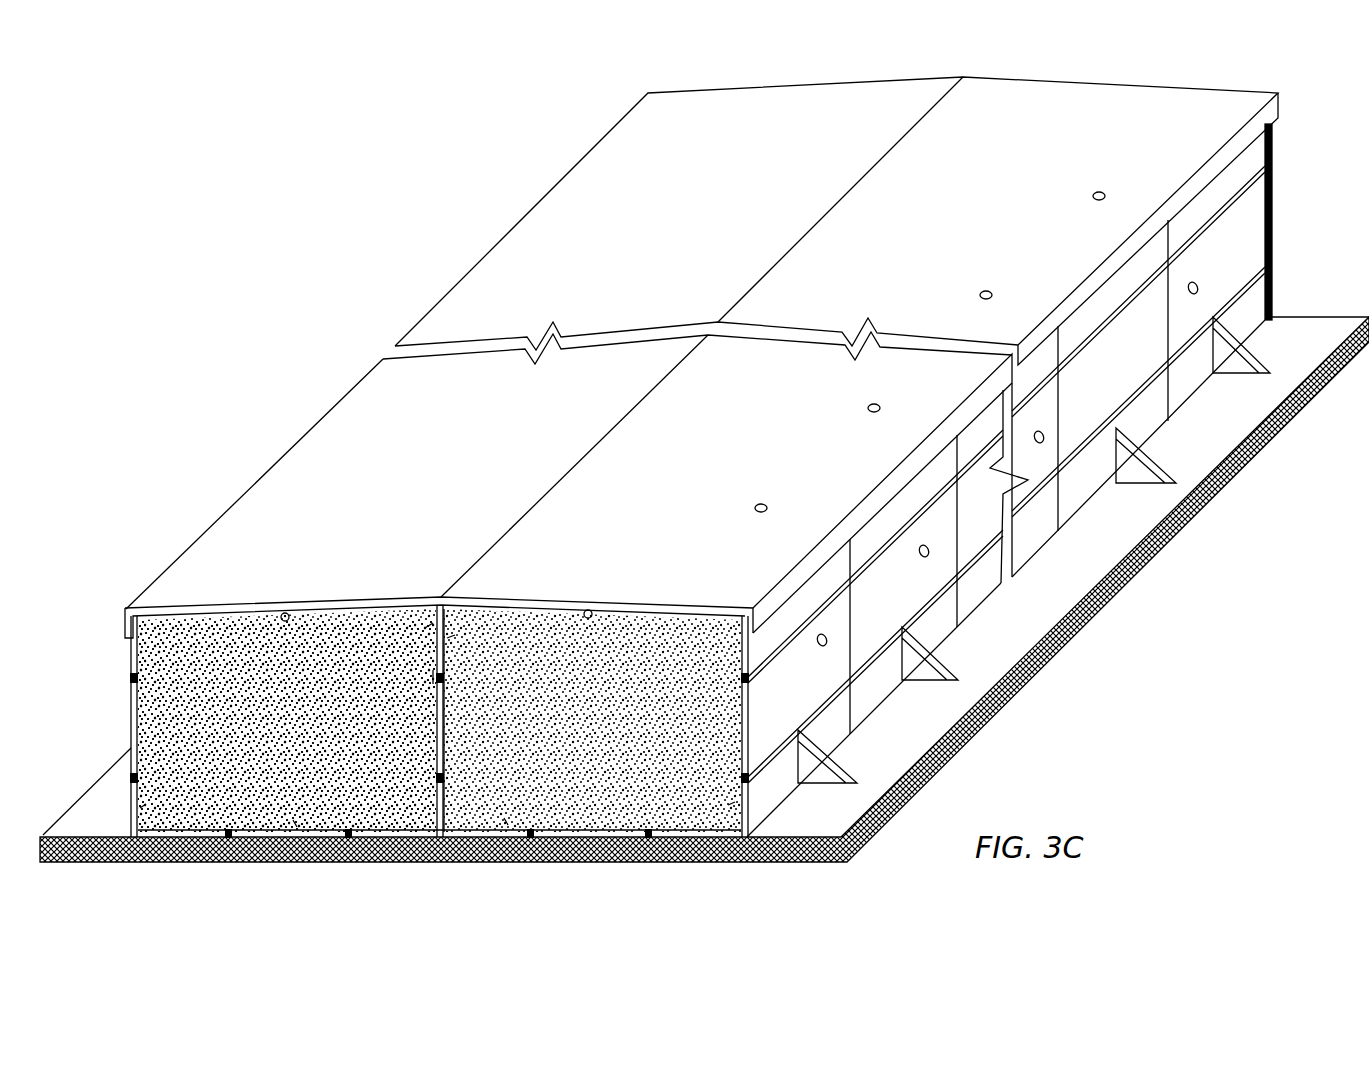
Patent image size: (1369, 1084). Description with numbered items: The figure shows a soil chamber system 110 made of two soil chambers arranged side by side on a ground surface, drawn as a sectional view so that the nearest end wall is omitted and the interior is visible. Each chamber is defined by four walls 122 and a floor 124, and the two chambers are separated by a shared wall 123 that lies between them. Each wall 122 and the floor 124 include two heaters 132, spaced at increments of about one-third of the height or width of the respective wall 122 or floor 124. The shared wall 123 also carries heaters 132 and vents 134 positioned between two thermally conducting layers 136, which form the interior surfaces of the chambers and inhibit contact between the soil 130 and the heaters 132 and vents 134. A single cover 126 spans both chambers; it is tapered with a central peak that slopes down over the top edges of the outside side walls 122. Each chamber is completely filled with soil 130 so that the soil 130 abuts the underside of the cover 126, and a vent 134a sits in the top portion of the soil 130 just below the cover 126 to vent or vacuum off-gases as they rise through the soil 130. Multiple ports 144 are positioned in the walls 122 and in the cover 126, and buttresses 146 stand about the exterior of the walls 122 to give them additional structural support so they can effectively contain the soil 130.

The soil chamber system 110 is at (522, 157).
The wall 122 is at (131, 716).
The shared wall 123 is at (453, 717).
The floor 124 is at (267, 843).
The cover 126 is at (567, 587).
The soil 130 is at (315, 741).
The heater 132 is at (131, 678).
The vent 134 is at (433, 677).
The vent 134a is at (282, 622).
The thermally conducting layer 136 is at (433, 623).
The port 144 is at (1098, 190).
The buttress 146 is at (1222, 373).